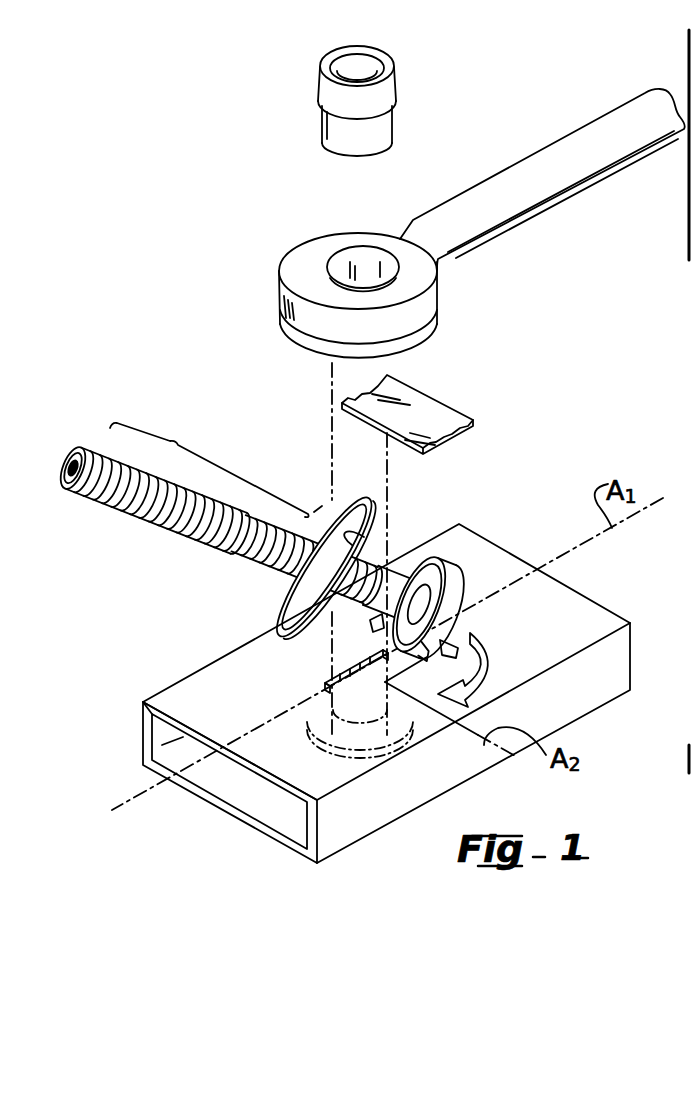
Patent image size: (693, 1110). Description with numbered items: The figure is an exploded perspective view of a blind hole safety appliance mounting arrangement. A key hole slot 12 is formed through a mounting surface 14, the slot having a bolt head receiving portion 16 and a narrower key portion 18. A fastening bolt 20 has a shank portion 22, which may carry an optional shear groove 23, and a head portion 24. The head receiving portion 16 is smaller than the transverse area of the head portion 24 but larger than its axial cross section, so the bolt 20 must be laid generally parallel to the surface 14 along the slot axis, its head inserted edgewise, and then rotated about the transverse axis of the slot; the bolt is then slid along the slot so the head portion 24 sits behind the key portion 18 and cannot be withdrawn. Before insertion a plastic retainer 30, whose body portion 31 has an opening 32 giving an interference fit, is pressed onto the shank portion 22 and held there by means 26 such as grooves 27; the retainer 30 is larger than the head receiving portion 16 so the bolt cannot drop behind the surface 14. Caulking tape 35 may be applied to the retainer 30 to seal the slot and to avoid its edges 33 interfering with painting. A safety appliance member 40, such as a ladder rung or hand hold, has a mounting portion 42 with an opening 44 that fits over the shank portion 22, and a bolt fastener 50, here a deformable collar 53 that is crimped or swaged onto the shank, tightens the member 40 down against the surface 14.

The key hole slot 12 is at (327, 680).
The surface 14 is at (386, 693).
The bolt head receiving portion 16 is at (455, 633).
The key portion 18 is at (328, 676).
The fastening bolt 20 is at (218, 514).
The shank portion 22 is at (223, 543).
The shear groove 23 is at (233, 562).
The head portion 24 is at (450, 585).
The means for maintaining the retainer in place 26 is at (375, 566).
The grooves 27 is at (209, 461).
The plastic retainer 30 is at (349, 544).
The body portion 31 is at (355, 540).
The opening 32 is at (312, 456).
The edges 33 is at (362, 632).
The caulking tape 35 is at (433, 415).
The safety appliance member 40 is at (470, 231).
The mounting portion 42 is at (372, 291).
The opening 44 is at (337, 262).
The bolt fastener 50 is at (414, 101).
The collar 53 is at (386, 118).